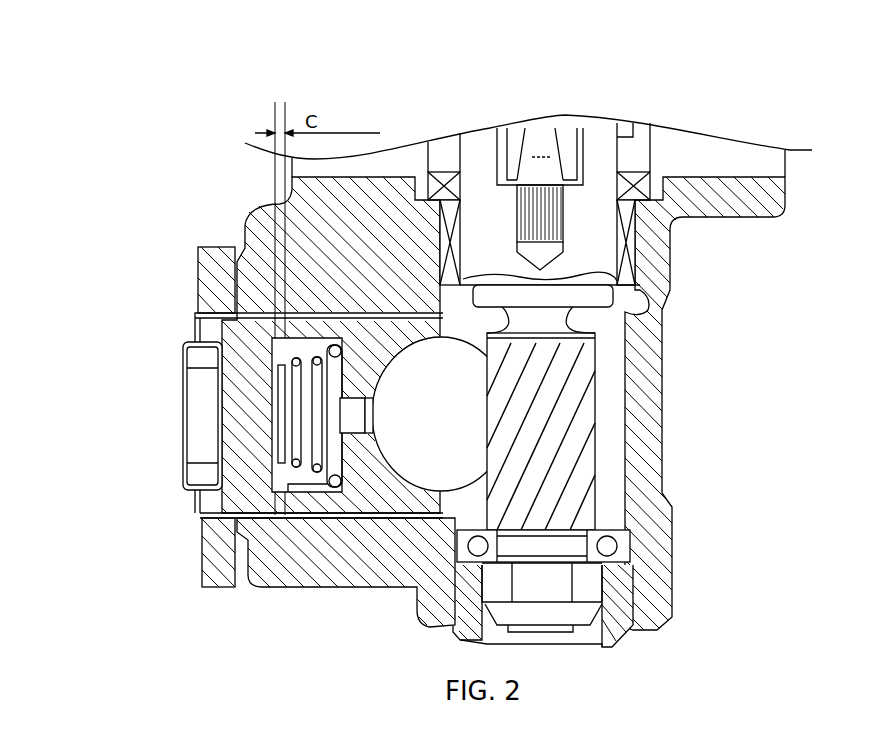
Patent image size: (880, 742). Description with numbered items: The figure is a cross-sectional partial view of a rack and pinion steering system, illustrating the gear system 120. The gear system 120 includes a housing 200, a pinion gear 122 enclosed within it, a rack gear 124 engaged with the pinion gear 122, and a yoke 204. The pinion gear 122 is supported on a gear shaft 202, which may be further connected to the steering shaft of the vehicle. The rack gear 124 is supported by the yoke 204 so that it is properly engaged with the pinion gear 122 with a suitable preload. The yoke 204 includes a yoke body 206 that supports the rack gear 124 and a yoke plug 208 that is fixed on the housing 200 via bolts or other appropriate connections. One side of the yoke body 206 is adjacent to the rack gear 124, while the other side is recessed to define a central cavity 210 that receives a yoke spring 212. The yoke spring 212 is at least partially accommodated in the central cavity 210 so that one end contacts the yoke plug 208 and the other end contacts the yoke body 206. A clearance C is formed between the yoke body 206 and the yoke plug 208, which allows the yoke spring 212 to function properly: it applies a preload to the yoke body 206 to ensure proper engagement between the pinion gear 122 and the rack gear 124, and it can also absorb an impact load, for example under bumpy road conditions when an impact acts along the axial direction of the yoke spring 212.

The gear system 120 is at (716, 130).
The pinion gear 122 is at (573, 437).
The rack gear 124 is at (459, 435).
The housing 200 is at (280, 207).
The gear shaft 202 is at (593, 297).
The yoke 204 is at (335, 518).
The yoke body 206 is at (361, 495).
The yoke plug 208 is at (197, 316).
The central cavity 210 is at (305, 351).
The yoke spring 212 is at (268, 392).